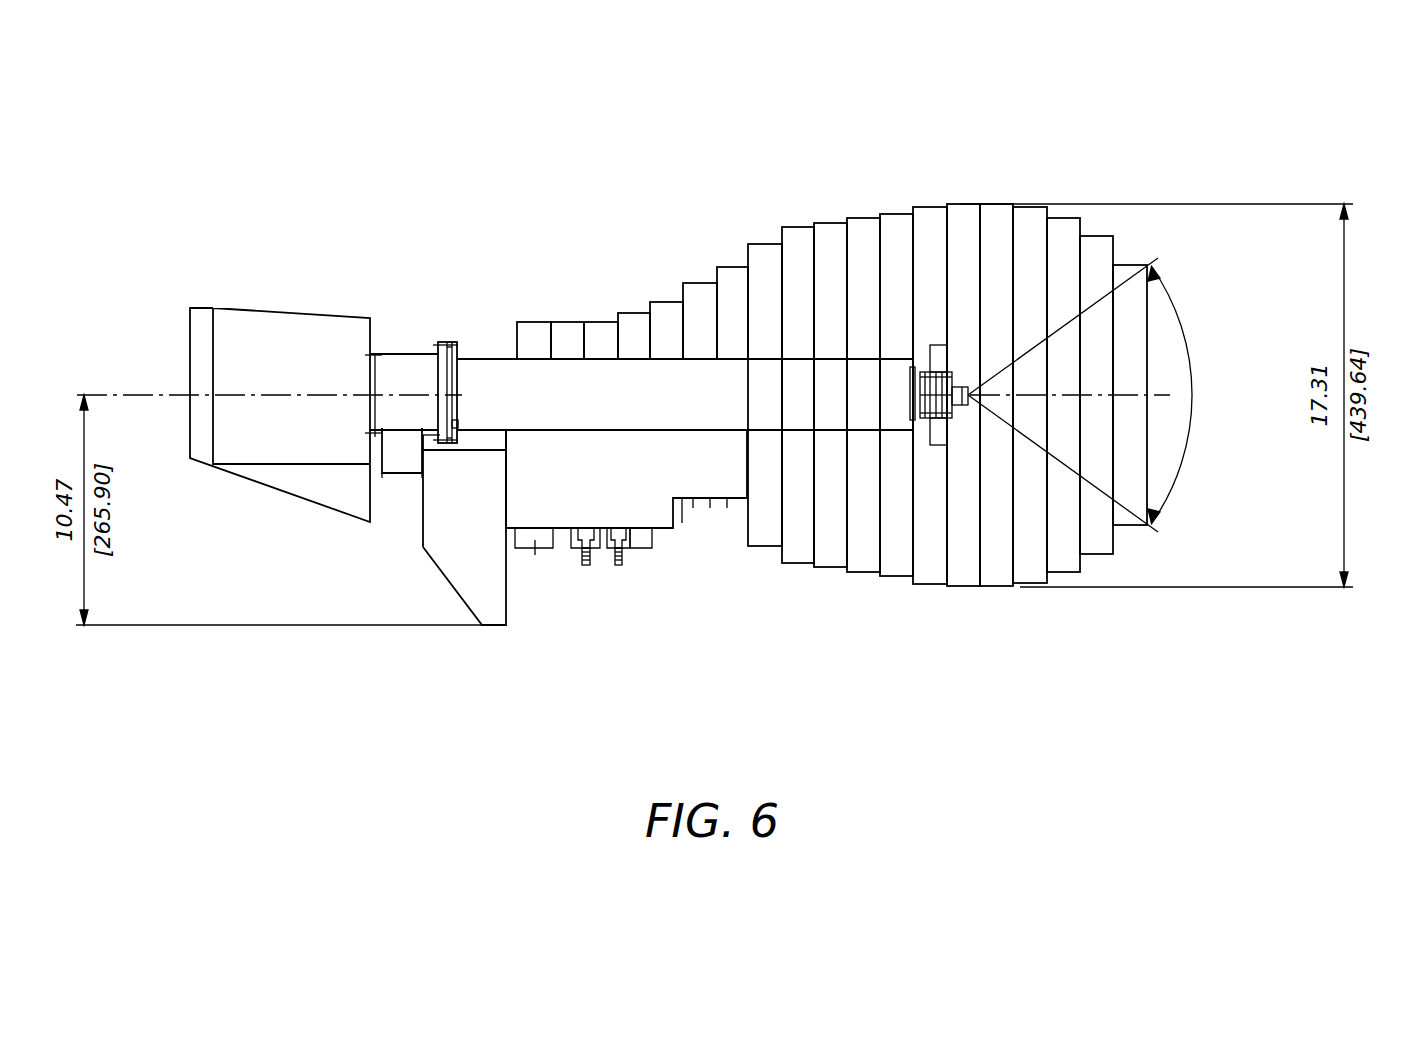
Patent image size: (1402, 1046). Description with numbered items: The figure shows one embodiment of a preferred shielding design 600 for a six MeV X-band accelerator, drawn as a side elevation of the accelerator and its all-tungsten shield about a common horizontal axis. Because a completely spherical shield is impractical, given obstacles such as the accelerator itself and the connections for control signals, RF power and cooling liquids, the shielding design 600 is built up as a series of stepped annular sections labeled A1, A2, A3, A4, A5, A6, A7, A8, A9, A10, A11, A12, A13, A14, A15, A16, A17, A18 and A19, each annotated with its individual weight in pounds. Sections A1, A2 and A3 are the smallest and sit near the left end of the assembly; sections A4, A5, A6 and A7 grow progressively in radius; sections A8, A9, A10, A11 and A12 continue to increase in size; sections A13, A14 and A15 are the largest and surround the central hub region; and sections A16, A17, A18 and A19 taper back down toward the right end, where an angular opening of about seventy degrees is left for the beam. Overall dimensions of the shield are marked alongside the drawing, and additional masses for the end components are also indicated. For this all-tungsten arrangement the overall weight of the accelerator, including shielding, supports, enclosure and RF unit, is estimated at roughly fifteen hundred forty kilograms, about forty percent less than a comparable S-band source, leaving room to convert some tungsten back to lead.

The shielding design 600 is at (334, 793).
The stage 1 blade row A1 is at (534, 307).
The stage 2 blade row A2 is at (567, 307).
The stage 3 blade row A3 is at (601, 307).
The stage 4 blade row A4 is at (634, 302).
The stage 5 blade row A5 is at (666, 297).
The stage 6 blade row A6 is at (700, 288).
The stage 7 blade row A7 is at (732, 281).
The stage 8 blade row A8 is at (765, 362).
The stage 9 blade row A9 is at (798, 363).
The stage 10 blade row A10 is at (831, 361).
The stage 11 blade row A11 is at (865, 218).
The stage 12 blade row A12 is at (898, 363).
The stage 13 blade row A13 is at (931, 207).
The stage 14 blade row A14 is at (964, 363).
The stage 15 blade row A15 is at (997, 204).
The stage 16 blade row A16 is at (1030, 363).
The stage 17 blade row A17 is at (1063, 213).
The stage 18 blade row A18 is at (1096, 228).
The stage 19 blade row A19 is at (1130, 257).